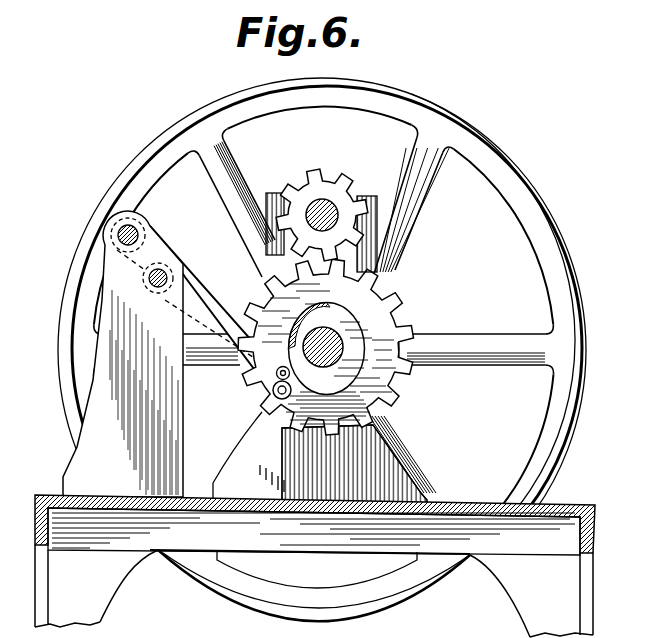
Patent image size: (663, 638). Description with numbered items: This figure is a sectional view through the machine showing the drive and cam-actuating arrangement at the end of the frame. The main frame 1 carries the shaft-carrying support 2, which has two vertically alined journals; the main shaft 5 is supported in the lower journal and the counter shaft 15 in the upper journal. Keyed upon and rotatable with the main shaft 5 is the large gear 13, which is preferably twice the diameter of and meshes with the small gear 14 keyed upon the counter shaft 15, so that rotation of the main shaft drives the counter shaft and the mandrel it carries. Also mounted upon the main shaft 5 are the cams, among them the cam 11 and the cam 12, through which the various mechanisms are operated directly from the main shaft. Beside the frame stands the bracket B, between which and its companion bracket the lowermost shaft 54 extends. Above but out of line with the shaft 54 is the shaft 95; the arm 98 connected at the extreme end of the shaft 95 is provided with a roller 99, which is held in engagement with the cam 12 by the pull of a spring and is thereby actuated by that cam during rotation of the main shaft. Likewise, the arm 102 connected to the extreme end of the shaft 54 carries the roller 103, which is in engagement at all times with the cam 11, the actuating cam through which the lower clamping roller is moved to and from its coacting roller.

The main frame 1 is at (155, 513).
The shaft-carrying support 2 is at (365, 466).
The main shaft 5 is at (350, 367).
The cam 11 is at (345, 346).
The cam 12 is at (318, 312).
The large gear 13 is at (400, 367).
The small gear 14 is at (340, 183).
The counter shaft 15 is at (318, 200).
The shaft 54 is at (156, 292).
The shaft 95 is at (147, 233).
The arm 98 is at (189, 276).
The roller 99 is at (274, 398).
The arm 102 is at (220, 327).
The roller 103 is at (277, 376).
The bracket B is at (105, 440).